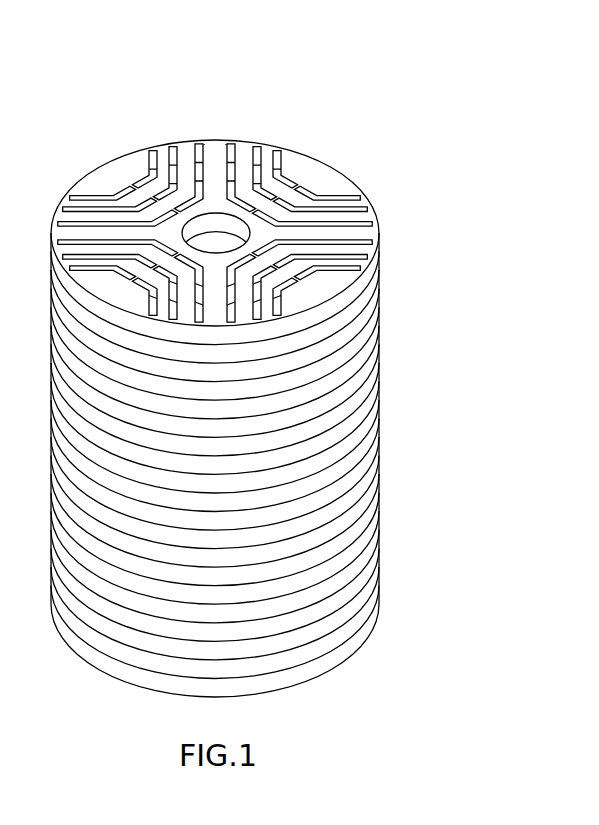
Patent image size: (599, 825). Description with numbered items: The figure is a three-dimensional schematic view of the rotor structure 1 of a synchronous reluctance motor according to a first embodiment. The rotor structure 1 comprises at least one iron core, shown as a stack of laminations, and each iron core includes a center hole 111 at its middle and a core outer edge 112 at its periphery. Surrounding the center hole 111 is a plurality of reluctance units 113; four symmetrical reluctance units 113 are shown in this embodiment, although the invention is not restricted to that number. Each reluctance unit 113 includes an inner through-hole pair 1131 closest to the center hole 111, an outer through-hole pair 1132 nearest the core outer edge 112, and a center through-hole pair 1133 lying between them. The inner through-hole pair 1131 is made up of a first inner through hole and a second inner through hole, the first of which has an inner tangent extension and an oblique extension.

The rotor structure 1 is at (267, 376).
The center hole 111 is at (192, 219).
The core outer edge 112 is at (220, 146).
The reluctance unit 113 is at (271, 193).
The inner through-hole pair 1131 is at (374, 224).
The outer through-hole pair 1132 is at (215, 211).
The center through-hole pair 1133 is at (373, 207).